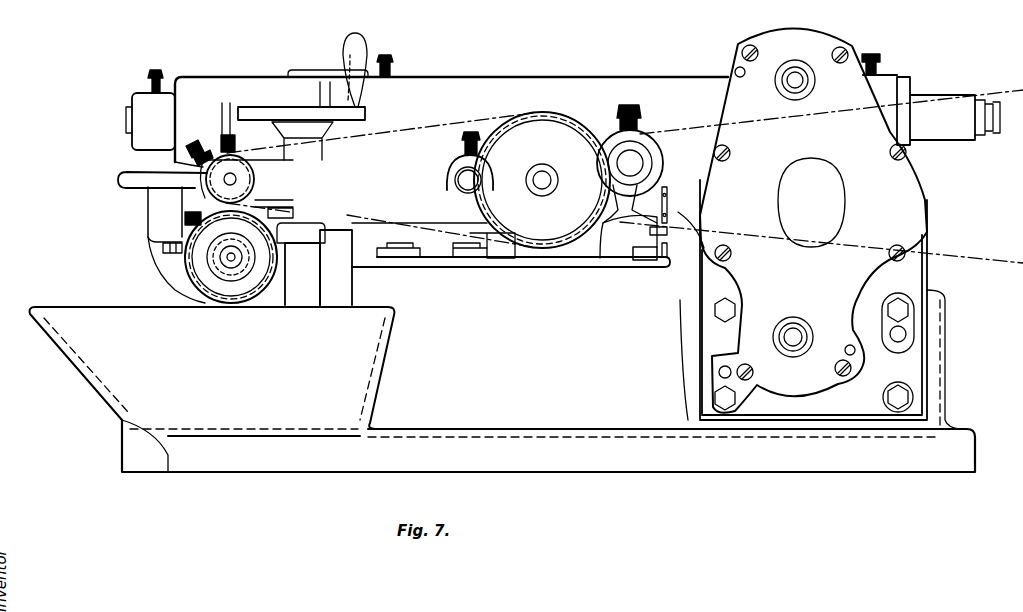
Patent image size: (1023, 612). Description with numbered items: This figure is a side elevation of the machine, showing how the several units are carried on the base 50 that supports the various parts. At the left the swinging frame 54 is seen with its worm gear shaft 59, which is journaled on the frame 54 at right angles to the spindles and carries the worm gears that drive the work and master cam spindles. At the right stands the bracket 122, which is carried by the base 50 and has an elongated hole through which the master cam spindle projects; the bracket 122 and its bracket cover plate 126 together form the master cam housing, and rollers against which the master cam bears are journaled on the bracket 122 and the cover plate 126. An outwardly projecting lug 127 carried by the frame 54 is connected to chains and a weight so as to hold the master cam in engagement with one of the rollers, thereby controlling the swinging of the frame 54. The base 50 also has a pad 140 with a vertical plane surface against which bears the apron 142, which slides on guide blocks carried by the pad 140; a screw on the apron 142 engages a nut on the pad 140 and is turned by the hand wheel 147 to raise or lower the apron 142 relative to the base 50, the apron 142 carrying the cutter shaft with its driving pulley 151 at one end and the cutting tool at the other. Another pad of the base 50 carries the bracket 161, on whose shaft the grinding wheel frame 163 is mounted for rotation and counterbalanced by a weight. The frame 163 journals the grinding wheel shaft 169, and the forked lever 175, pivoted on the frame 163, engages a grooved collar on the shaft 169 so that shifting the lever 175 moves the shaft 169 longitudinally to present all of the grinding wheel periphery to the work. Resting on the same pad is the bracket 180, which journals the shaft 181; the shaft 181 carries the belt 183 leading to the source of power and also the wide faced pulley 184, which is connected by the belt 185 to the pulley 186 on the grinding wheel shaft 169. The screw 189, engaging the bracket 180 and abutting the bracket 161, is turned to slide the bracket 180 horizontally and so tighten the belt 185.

The base 50 is at (958, 430).
The swinging frame 54 is at (607, 77).
The worm gear shaft 59 is at (128, 120).
The bracket 122 is at (928, 232).
The bracket cover plate 126 is at (808, 40).
The lug 127 is at (666, 220).
The pad 140 is at (337, 252).
The apron 142 is at (305, 293).
The hand wheel 147 is at (266, 106).
The driving pulley 151 is at (196, 278).
The bracket 161 is at (443, 255).
The grinding wheel frame 163 is at (378, 172).
The grinding wheel shaft 169 is at (236, 181).
The forked lever 175 is at (125, 181).
The bracket 180 is at (603, 253).
The shaft 181 is at (545, 178).
The belt 183 is at (985, 97).
The wide faced pulley 184 is at (553, 112).
The belt 185 is at (457, 125).
The pulley 186 is at (256, 172).
The screw 189 is at (657, 253).